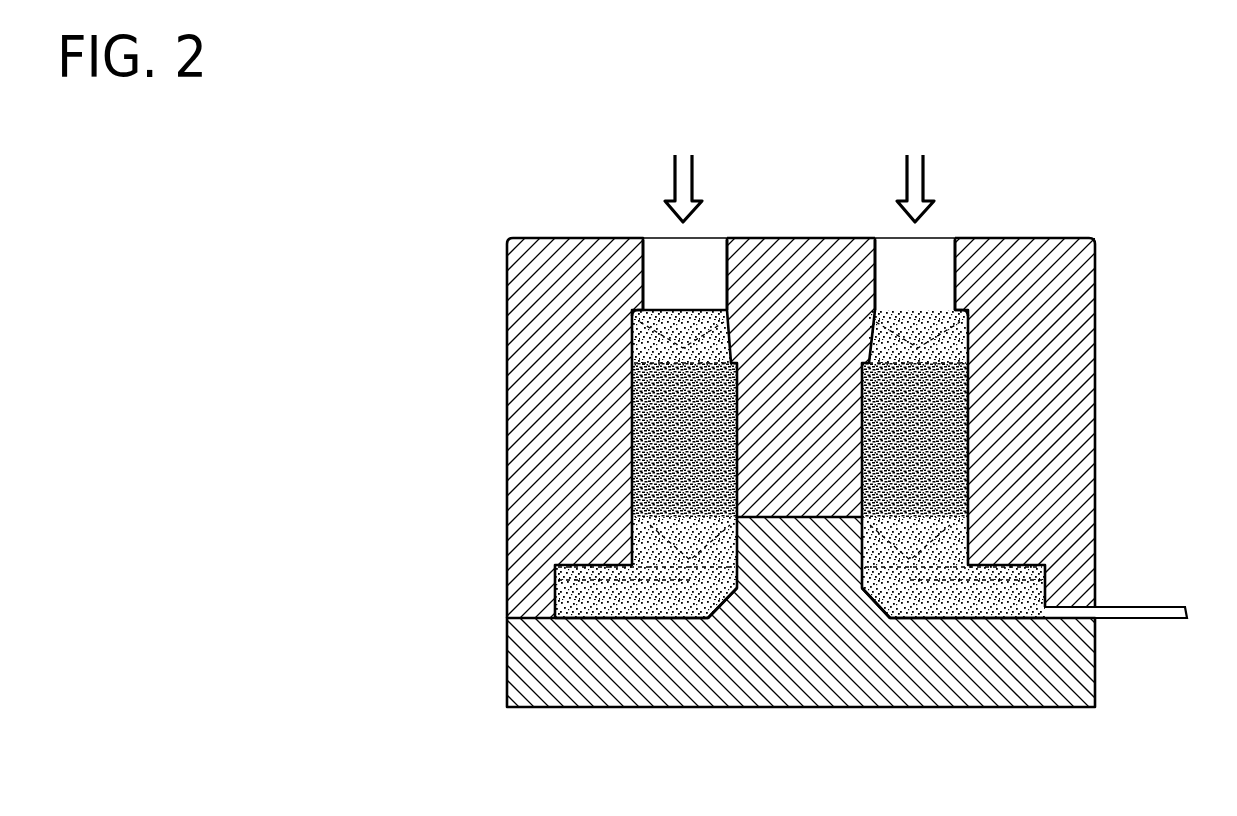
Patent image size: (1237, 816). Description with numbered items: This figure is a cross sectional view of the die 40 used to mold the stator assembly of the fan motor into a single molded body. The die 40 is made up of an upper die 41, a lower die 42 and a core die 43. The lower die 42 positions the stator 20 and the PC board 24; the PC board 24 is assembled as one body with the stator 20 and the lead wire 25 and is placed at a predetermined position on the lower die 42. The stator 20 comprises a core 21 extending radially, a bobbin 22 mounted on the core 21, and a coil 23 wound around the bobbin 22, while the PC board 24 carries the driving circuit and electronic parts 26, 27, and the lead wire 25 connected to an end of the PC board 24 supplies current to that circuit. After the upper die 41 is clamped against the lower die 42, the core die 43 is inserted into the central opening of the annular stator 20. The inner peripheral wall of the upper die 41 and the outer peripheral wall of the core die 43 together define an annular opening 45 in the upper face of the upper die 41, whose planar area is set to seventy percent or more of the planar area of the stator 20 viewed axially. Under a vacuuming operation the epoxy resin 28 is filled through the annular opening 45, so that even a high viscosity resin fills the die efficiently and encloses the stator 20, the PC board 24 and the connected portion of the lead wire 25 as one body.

The stator 20 is at (988, 320).
The core 21 is at (958, 430).
The bobbin 22 is at (970, 312).
The coil 23 is at (694, 598).
The PC board 24 is at (1025, 568).
The lead wire 25 is at (1135, 607).
The electronic part 26 is at (655, 600).
The electronic part 27 is at (580, 618).
The epoxy resin 28 is at (928, 600).
The die 40 is at (1158, 139).
The upper die 41 is at (1072, 238).
The lower die 42 is at (1020, 707).
The core die 43 is at (762, 238).
The annular opening 45 is at (930, 255).